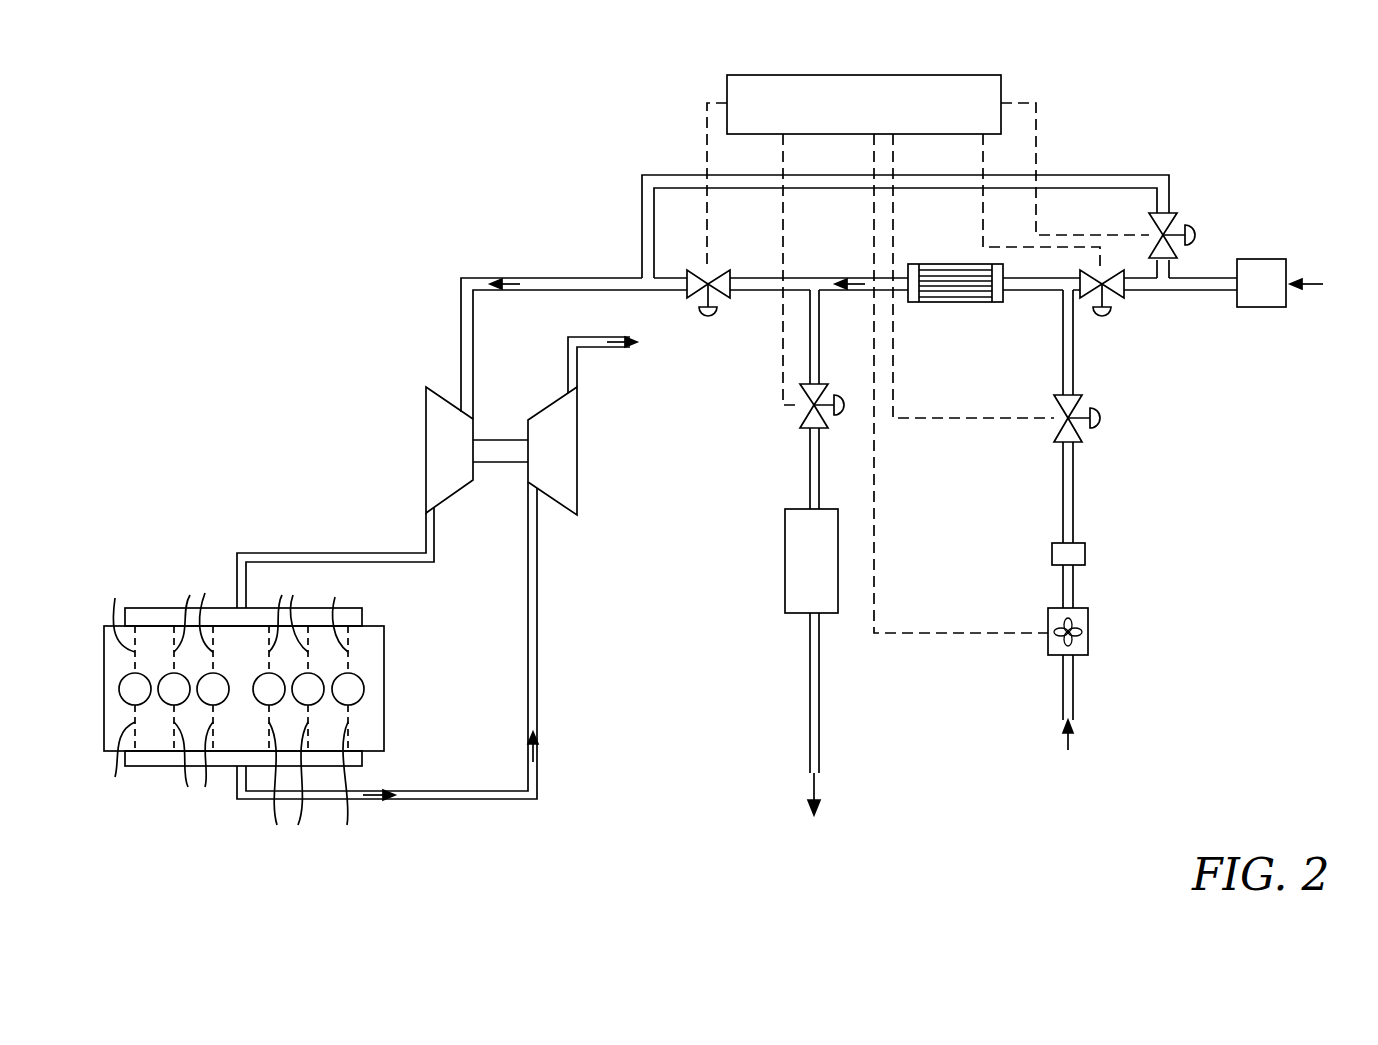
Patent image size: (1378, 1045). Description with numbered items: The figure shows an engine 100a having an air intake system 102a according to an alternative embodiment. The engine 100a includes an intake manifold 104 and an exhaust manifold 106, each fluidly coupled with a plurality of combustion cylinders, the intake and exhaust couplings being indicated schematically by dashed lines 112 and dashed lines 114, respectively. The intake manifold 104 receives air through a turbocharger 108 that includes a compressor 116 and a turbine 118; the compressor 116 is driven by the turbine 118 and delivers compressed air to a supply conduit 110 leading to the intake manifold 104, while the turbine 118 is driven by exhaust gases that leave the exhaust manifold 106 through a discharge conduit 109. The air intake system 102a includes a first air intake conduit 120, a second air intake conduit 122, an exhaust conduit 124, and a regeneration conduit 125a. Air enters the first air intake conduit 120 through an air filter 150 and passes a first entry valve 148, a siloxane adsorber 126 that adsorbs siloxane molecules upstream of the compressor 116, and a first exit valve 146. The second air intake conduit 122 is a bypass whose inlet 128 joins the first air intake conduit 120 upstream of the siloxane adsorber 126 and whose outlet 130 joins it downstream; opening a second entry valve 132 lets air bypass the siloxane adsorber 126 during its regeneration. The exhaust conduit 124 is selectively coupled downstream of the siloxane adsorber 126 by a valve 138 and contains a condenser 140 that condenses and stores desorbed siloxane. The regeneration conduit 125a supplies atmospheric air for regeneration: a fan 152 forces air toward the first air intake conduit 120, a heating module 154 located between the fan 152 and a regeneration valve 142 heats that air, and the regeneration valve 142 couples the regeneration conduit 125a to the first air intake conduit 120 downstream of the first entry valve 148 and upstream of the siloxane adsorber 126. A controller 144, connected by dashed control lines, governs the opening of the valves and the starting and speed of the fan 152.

The engine 100a is at (243, 131).
The air intake system 102a is at (1252, 115).
The intake manifold 104 is at (158, 608).
The exhaust manifold 106 is at (158, 766).
The turbocharger 108 is at (514, 468).
The discharge conduit 109 is at (406, 790).
The supply conduit 110 is at (262, 553).
The dashed lines 112 is at (220, 606).
The dashed lines 114 is at (225, 789).
The compressor 116 is at (425, 436).
The turbine 118 is at (578, 430).
The first air intake conduit 120 is at (1200, 290).
The second air intake conduit 122 is at (1083, 175).
The exhaust conduit 124 is at (809, 484).
The regeneration conduit 125a is at (1062, 507).
The siloxane adsorber 126 is at (935, 302).
The inlet 128 is at (1166, 283).
The outlet 130 is at (645, 282).
The second entry valve 132 is at (1178, 222).
The valve 138 is at (802, 415).
The condenser 140 is at (785, 578).
The regeneration valve 142 is at (1057, 430).
The controller 144 is at (928, 354).
The first exit valve 146 is at (690, 270).
The first entry valve 148 is at (1120, 298).
The air filter 150 is at (1294, 283).
The fan 152 is at (1088, 632).
The heating module 154 is at (1087, 557).